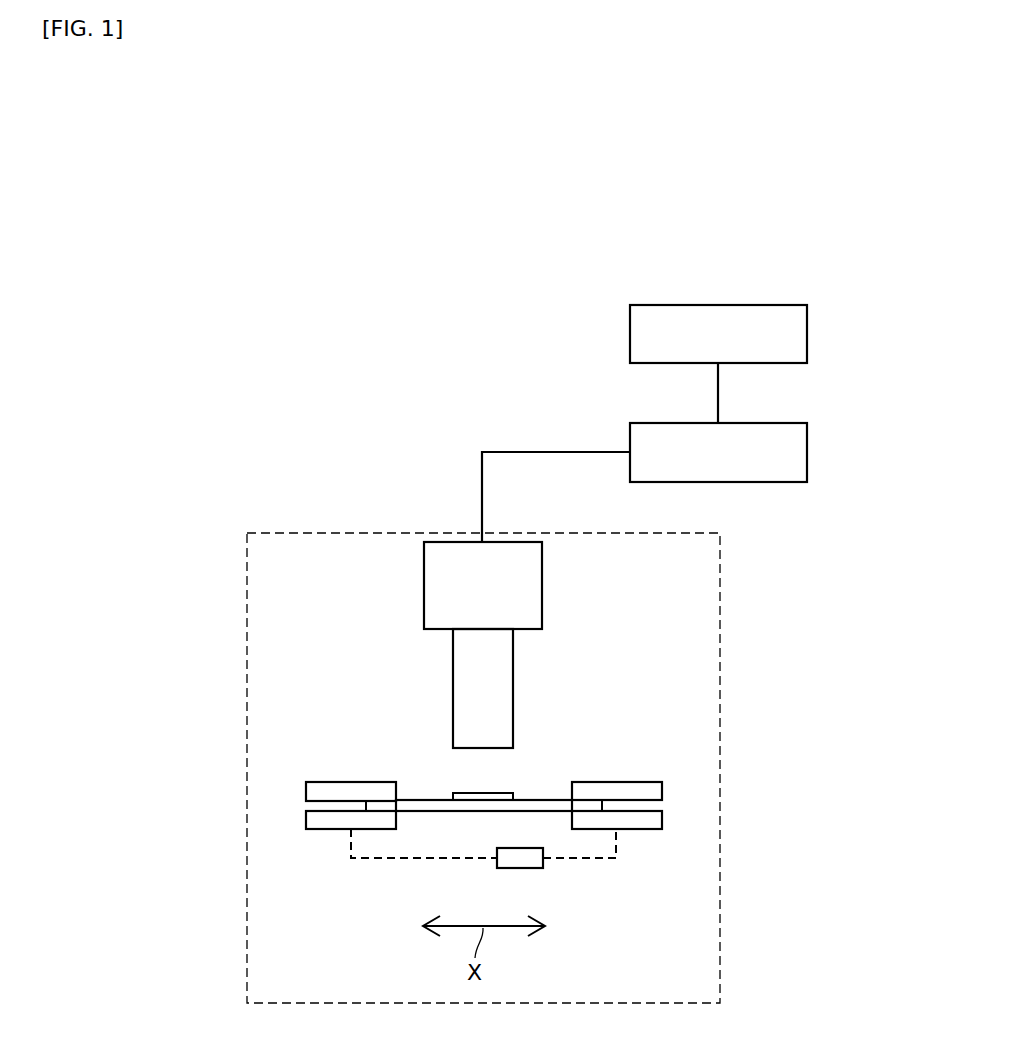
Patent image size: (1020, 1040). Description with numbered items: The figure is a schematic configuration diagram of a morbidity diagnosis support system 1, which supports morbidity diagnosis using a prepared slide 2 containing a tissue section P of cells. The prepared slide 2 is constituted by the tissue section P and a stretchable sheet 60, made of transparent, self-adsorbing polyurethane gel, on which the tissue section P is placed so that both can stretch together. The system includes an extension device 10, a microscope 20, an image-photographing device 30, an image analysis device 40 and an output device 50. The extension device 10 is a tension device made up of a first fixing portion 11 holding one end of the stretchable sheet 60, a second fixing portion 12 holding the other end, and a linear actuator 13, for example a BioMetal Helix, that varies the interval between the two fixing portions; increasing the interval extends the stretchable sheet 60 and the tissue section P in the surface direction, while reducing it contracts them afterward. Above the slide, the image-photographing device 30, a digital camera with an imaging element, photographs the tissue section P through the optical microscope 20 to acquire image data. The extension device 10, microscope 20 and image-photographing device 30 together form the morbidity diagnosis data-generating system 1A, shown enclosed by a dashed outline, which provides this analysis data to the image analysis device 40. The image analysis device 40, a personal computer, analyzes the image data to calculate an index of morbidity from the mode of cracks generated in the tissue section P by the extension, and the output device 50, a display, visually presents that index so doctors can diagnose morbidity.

The morbidity diagnosis support system 1 is at (397, 266).
The morbidity diagnosis data-generating system 1A is at (720, 568).
The prepared slide 2 is at (601, 714).
The extension device 10 is at (626, 762).
The first fixing portion 11 is at (648, 820).
The second fixing portion 12 is at (318, 820).
The linear actuator 13 is at (530, 857).
The microscope 20 is at (453, 689).
The image-photographing device 30 is at (424, 586).
The image analysis device 40 is at (807, 452).
The output device 50 is at (807, 335).
The stretchable sheet 60 is at (545, 800).
The tissue section P is at (493, 793).